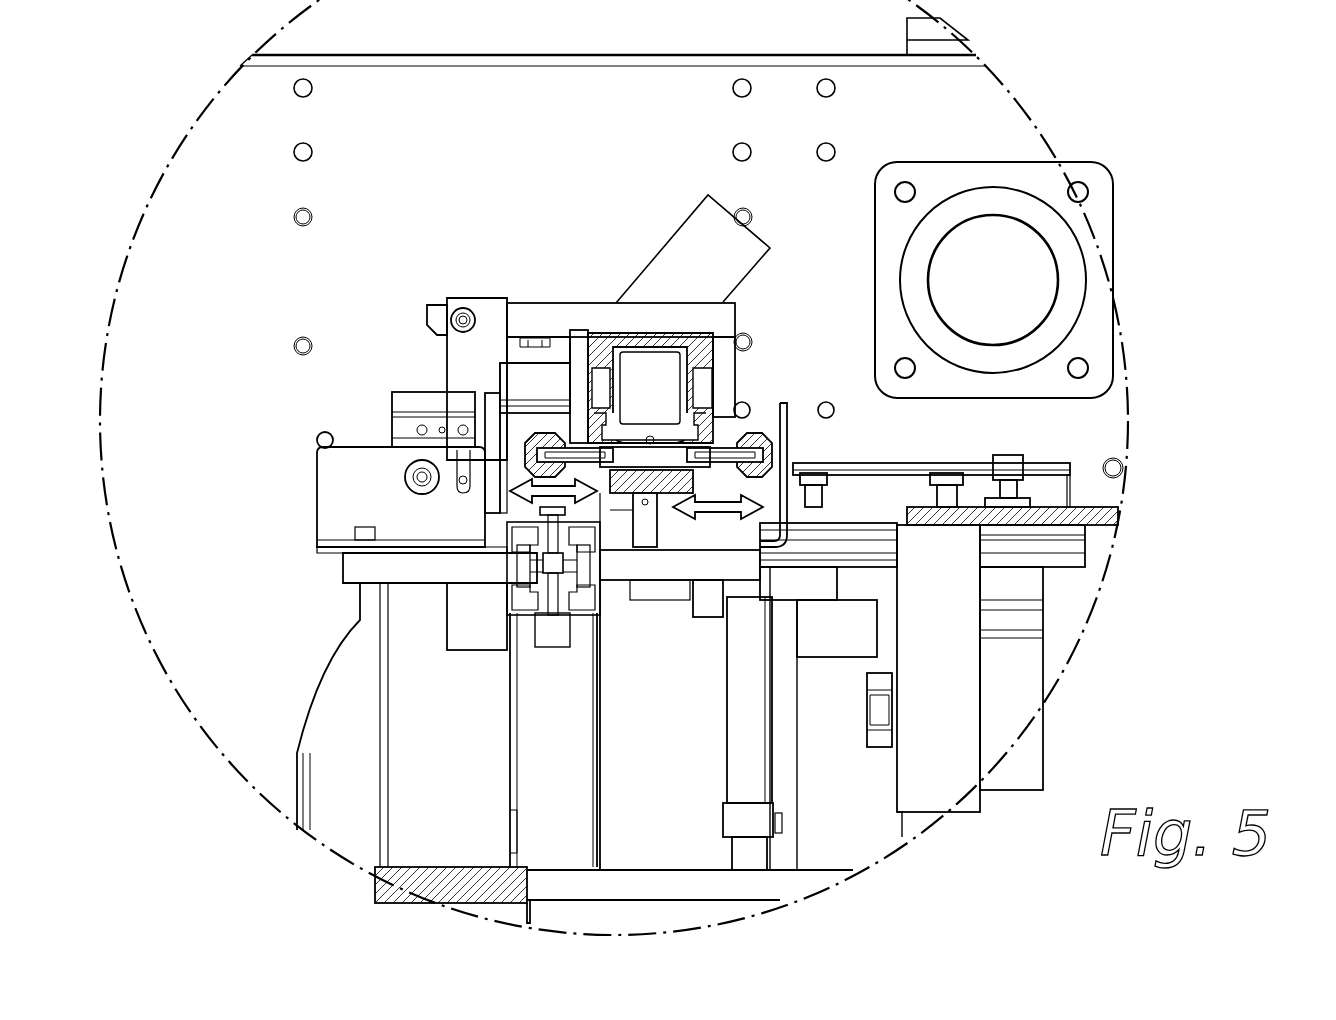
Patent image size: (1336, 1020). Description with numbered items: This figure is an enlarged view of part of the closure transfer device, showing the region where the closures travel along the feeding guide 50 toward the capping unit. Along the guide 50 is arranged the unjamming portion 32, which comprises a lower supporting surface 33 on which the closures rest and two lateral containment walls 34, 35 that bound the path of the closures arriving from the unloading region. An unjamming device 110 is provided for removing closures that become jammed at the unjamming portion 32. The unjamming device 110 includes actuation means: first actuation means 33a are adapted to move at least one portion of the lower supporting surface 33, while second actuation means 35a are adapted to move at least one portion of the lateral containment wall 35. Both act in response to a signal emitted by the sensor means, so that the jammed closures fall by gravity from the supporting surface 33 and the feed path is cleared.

The guide 50 is at (557, 298).
The unjamming device 110 is at (658, 418).
The lateral containment wall 34 is at (578, 457).
The unjamming portion 32 is at (717, 440).
The lateral containment wall 35 is at (787, 420).
The second actuation means 35a is at (398, 386).
The lower supporting surface 33 is at (663, 478).
The first actuation means 33a is at (765, 505).